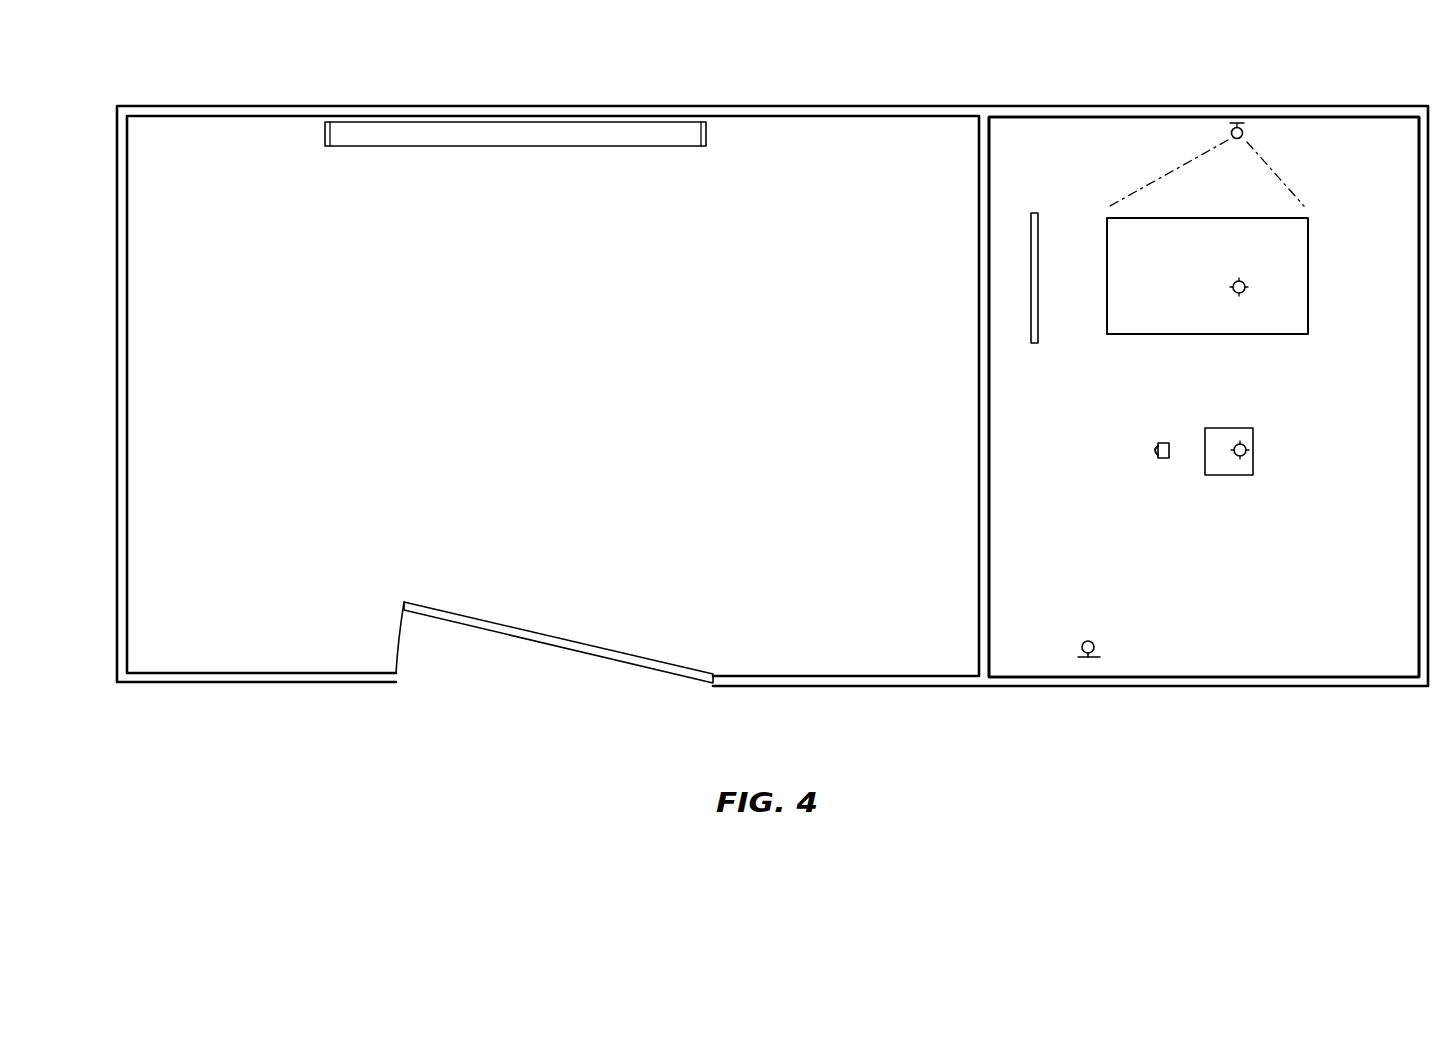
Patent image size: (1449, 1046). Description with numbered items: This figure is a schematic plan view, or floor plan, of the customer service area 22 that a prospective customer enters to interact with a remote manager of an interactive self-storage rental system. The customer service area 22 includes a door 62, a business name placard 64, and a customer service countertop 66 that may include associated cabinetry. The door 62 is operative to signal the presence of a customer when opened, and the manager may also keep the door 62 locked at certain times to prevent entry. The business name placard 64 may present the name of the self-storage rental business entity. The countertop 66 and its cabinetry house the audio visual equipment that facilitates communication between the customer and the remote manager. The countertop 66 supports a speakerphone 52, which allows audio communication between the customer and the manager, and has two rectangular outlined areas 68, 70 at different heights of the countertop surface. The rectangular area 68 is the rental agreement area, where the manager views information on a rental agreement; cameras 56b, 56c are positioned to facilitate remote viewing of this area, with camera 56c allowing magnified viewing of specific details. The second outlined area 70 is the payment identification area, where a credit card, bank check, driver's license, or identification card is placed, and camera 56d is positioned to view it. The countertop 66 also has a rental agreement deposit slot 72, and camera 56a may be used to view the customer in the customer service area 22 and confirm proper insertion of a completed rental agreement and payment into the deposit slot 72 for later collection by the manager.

The customer service area 22 is at (290, 732).
The door 62 is at (510, 623).
The business name placard 64 is at (450, 147).
The customer service countertop 66 is at (1323, 143).
The rental agreement deposit slot 72 is at (1030, 238).
The rental agreement area 68 is at (1114, 312).
The camera 56a is at (1095, 640).
The camera 56b is at (1232, 137).
The camera 56c is at (1229, 290).
The camera 56d is at (1248, 447).
The speakerphone 52 is at (1163, 463).
The payment identification area 70 is at (1225, 470).